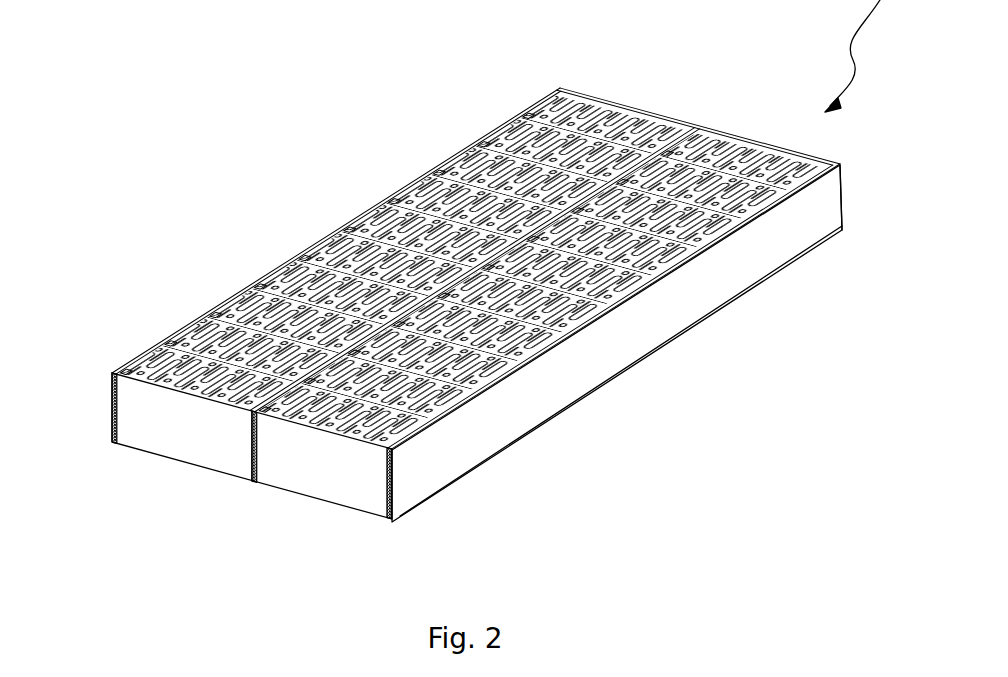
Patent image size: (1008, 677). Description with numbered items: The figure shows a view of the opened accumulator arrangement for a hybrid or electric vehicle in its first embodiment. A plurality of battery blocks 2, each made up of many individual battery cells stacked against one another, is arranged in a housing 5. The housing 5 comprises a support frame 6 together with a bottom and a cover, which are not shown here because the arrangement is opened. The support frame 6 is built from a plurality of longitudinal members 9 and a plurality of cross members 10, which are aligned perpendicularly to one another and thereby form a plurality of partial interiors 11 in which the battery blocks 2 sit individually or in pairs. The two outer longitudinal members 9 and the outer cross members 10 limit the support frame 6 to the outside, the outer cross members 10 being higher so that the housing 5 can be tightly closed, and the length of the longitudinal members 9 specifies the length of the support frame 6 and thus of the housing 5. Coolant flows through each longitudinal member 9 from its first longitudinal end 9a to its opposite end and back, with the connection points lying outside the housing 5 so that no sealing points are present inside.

The battery block 2 is at (420, 190).
The housing 5 is at (477, 305).
The support frame 6 is at (674, 346).
The longitudinal member 9 is at (115, 372).
The first longitudinal end 9a is at (110, 428).
The cross member 10 is at (258, 283).
The partial interior 11 is at (235, 303).